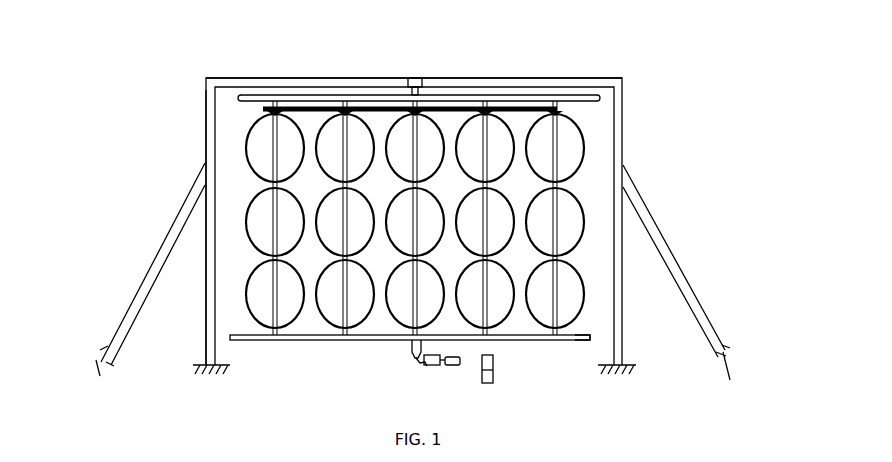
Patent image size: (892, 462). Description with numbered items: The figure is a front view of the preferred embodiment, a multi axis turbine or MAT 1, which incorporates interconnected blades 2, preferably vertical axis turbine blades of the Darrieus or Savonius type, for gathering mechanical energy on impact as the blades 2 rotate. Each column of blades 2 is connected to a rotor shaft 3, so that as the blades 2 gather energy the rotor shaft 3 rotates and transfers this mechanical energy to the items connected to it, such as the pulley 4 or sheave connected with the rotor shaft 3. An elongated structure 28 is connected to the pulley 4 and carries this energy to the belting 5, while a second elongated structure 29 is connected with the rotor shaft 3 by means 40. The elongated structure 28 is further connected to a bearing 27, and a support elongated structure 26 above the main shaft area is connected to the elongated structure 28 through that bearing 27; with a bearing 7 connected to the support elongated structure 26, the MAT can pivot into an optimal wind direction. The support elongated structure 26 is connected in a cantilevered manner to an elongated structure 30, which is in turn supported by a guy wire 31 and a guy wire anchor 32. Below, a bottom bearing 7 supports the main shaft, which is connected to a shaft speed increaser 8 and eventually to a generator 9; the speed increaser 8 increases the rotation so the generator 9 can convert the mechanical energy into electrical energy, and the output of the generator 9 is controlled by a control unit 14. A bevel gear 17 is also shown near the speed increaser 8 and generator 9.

The MAT 1 is at (603, 78).
The blades 2 is at (500, 112).
The rotor shaft 3 is at (497, 188).
The pulley 4 is at (433, 112).
The belting 5 is at (365, 110).
The bearing 7 is at (412, 346).
The shaft speed increaser 8 is at (430, 366).
The generator 9 is at (452, 366).
The control unit 14 is at (493, 372).
The bevel gear 17 is at (422, 360).
The support elongated structure 26 is at (440, 78).
The bearing 27 is at (408, 80).
The elongated structure 28 is at (508, 78).
The elongated structure 29 is at (518, 340).
The elongated structure 30 is at (206, 103).
The guy wire 31 is at (180, 228).
The guy wire anchor 32 is at (104, 348).
The means 40 is at (586, 336).